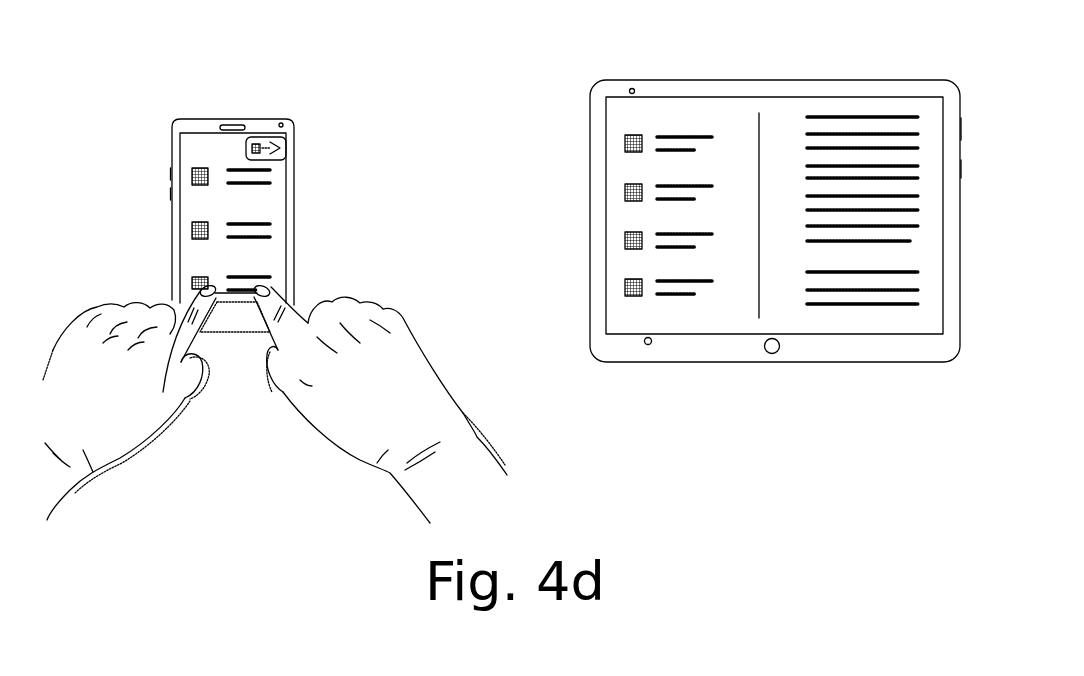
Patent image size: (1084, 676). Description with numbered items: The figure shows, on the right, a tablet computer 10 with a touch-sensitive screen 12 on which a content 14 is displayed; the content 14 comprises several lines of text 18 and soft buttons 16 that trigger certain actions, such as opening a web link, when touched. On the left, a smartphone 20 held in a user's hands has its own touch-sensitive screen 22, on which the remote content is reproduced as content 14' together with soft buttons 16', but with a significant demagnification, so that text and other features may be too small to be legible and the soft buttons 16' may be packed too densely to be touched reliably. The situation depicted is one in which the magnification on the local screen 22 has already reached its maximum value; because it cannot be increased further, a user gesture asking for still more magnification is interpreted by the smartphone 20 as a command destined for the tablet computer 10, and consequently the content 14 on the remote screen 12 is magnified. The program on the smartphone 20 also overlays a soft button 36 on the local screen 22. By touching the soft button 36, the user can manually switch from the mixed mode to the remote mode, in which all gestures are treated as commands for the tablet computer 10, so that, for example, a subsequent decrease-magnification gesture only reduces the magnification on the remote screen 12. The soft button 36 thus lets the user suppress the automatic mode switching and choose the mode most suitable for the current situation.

The tablet computer 10 is at (741, 367).
The touch-sensitive screen 12 is at (777, 117).
The content 14 is at (863, 286).
The content 14' is at (302, 230).
The soft buttons 16 is at (618, 234).
The soft buttons 16' is at (157, 178).
The lines of text 18 is at (822, 292).
The smartphone 20 is at (245, 345).
The touch-sensitive screen 22 is at (275, 204).
The soft button 36 is at (260, 140).